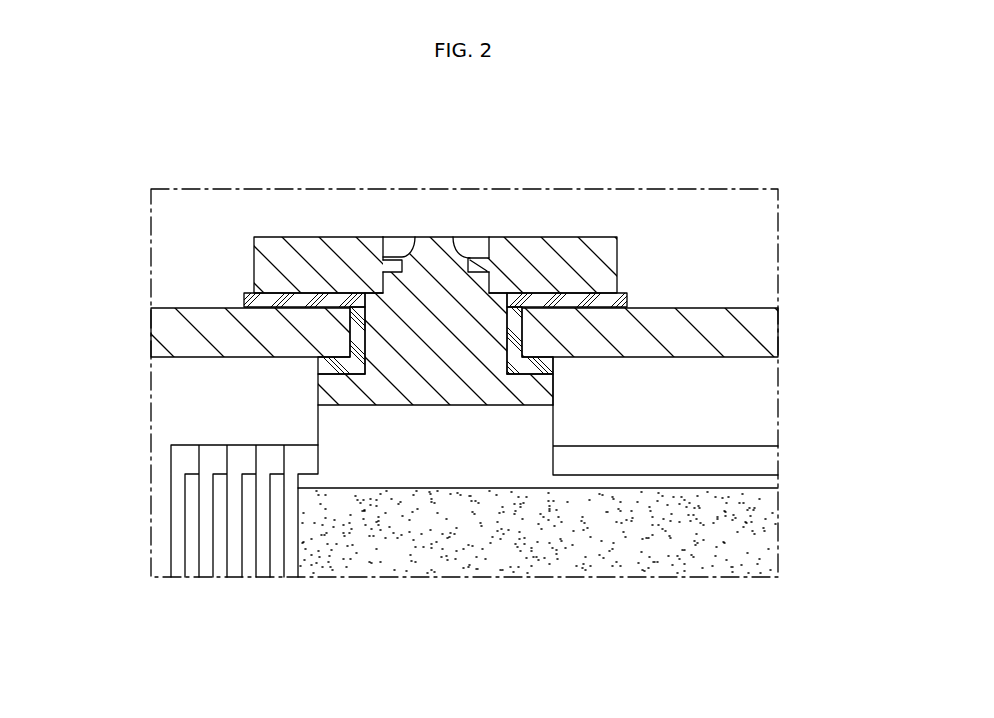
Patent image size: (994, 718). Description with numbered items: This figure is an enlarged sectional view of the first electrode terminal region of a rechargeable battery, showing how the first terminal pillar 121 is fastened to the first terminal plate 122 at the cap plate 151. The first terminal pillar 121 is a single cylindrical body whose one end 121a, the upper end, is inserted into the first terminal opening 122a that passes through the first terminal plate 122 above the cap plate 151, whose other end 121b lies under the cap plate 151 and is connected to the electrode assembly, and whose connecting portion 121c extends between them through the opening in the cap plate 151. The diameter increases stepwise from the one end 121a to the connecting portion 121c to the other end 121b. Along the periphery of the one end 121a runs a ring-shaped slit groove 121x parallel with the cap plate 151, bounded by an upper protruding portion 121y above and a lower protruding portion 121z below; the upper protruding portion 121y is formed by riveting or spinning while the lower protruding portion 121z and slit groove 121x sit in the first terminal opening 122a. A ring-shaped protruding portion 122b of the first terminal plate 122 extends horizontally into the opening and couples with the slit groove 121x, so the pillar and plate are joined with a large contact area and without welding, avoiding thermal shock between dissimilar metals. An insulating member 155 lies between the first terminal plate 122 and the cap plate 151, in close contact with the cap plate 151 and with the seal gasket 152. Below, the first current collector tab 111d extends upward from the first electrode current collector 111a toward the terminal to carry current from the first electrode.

The first electrode current collector 111a is at (306, 481).
The first current collector tab 111d is at (375, 431).
The first terminal pillar 121 is at (440, 465).
The one end of first terminal pillar 121a is at (430, 262).
The other end of first terminal pillar 121b is at (482, 390).
The connecting portion 121c is at (448, 313).
The slit groove 121x is at (423, 258).
The upper protruding portion 121y is at (394, 300).
The lower protruding portion 121z is at (383, 293).
The first terminal plate 122 is at (608, 237).
The first terminal opening 122a is at (417, 245).
The protruding portion 122b is at (388, 260).
The cap plate 151 is at (713, 315).
The seal gasket 152 is at (526, 334).
The insulating member 155 is at (624, 293).